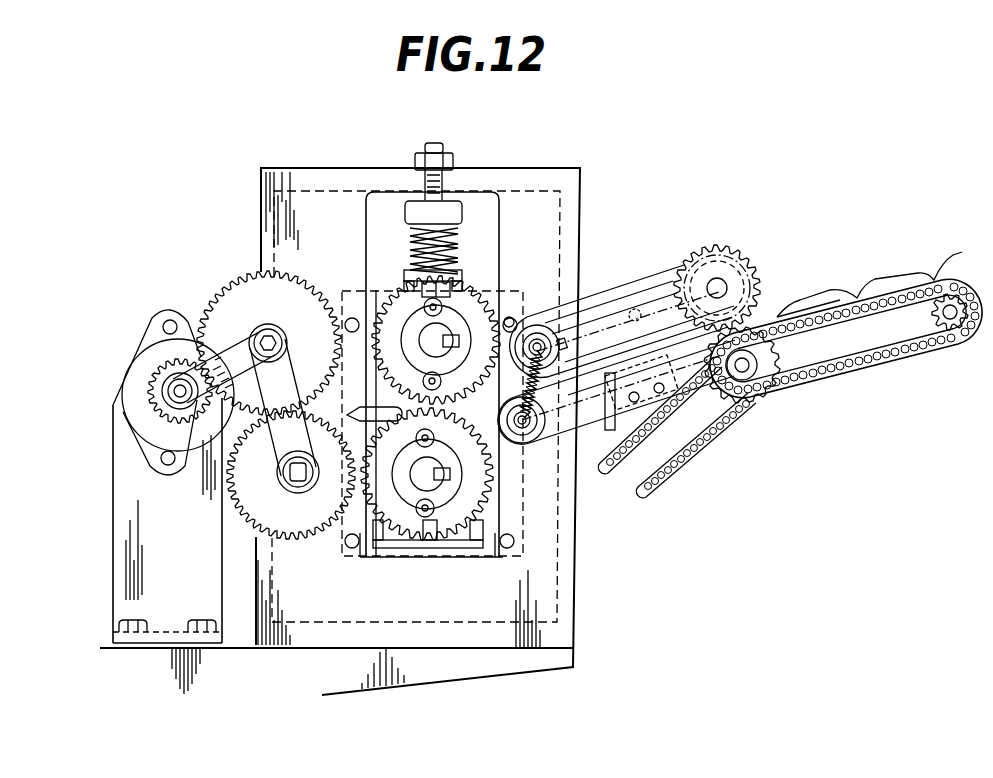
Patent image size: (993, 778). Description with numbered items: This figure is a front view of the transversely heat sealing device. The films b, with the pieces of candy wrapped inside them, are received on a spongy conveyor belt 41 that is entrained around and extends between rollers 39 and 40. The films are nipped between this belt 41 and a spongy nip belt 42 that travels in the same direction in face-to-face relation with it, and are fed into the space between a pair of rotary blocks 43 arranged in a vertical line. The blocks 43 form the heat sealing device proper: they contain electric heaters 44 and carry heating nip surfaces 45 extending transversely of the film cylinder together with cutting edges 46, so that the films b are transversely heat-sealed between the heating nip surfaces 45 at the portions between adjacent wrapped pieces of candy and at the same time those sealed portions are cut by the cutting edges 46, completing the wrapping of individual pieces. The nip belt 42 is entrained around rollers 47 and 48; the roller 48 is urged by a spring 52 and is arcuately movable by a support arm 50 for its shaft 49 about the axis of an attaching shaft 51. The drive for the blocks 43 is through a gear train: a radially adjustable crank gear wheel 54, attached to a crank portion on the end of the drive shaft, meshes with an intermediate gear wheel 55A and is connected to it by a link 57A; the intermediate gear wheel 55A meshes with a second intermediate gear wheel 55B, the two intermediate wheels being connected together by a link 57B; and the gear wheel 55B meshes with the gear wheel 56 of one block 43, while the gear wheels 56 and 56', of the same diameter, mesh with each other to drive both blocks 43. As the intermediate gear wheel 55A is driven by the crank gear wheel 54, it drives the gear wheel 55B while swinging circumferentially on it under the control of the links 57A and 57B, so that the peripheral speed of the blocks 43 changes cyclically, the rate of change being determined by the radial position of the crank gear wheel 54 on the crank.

The roller 39 is at (938, 342).
The roller 40 is at (513, 452).
The spongy conveyor belt 41 is at (683, 411).
The spongy nip belt 42 is at (568, 306).
The rotary blocks 43 is at (401, 340).
The electric heaters 44 is at (427, 318).
The heating nip surfaces 45 is at (412, 248).
The cutting edges 46 is at (447, 272).
The roller 47 is at (730, 257).
The roller 48 is at (590, 312).
The shaft 49 is at (538, 330).
The support arm 50 is at (610, 313).
The attaching shaft 51 is at (640, 309).
The spring 52 is at (570, 402).
The crank gear wheel 54 is at (157, 420).
The intermediate gear wheel 55A is at (233, 300).
The second intermediate gear wheel 55B is at (288, 523).
The gear wheel 56 is at (416, 489).
The gear wheel 56' is at (483, 284).
The link 57A is at (233, 355).
The link 57B is at (306, 359).
The films b is at (897, 273).